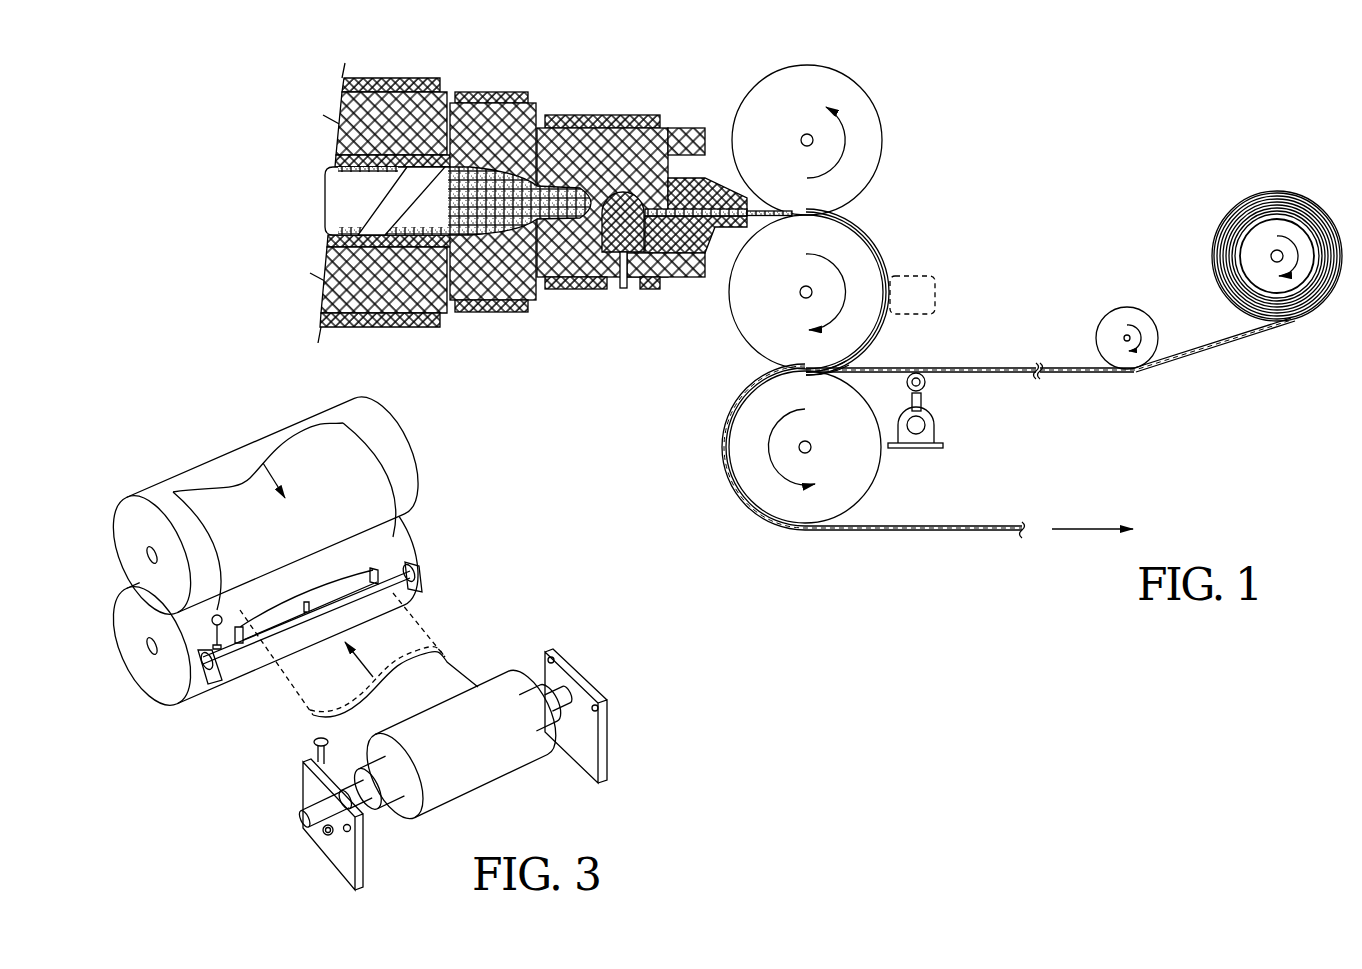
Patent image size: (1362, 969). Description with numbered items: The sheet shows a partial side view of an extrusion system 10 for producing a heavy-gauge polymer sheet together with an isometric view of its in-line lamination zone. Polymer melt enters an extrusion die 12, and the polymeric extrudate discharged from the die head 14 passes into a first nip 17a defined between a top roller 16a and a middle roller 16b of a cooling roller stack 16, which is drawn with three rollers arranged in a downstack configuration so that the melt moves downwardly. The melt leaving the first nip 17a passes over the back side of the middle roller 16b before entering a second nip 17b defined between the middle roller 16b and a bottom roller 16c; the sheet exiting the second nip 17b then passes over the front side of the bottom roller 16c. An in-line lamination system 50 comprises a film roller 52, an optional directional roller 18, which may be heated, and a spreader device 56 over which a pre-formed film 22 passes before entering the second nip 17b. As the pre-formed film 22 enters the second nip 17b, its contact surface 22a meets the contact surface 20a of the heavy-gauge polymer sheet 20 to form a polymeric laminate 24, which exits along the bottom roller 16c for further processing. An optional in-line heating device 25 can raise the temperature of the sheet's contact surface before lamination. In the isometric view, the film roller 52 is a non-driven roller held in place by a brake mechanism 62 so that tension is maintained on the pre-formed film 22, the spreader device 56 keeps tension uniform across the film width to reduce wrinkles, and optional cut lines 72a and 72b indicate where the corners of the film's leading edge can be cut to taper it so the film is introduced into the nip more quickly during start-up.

In FIG. 1, the extrusion system 10 is at (1162, 68).
In FIG. 1, the extrusion die 12 is at (528, 201).
In FIG. 1, the die head 14 is at (722, 286).
In FIG. 1, the cooling roller stack 16 is at (861, 292).
In FIG. 1, the top roller 16a is at (863, 163).
In FIG. 1, the middle roller 16b is at (851, 252).
In FIG. 3, the middle roller 16b is at (132, 536).
In FIG. 1, the bottom roller 16c is at (863, 448).
In FIG. 3, the bottom roller 16c is at (132, 627).
In FIG. 1, the first nip 17a is at (850, 212).
In FIG. 1, the second nip 17b is at (858, 361).
In FIG. 1, the directional roller 18 is at (1136, 320).
In FIG. 1, the heavy-gauge polymer sheet 20 is at (896, 292).
In FIG. 3, the heavy-gauge polymer sheet 20 is at (328, 478).
In FIG. 1, the contact surface of heavy-gauge polymer sheet 20a is at (852, 355).
In FIG. 1, the pre-formed film 22 is at (1075, 367).
In FIG. 3, the pre-formed film 22 is at (444, 690).
In FIG. 1, the contact surface of pre-formed film 22a is at (884, 370).
In FIG. 1, the polymeric laminate 24 is at (854, 542).
In FIG. 1, the in-line heating device 25 is at (936, 284).
In FIG. 1, the in-line lamination system 50 is at (1196, 271).
In FIG. 3, the in-line lamination system 50 is at (516, 590).
In FIG. 1, the film roller 52 is at (1296, 240).
In FIG. 3, the film roller 52 is at (592, 670).
In FIG. 1, the spreader device 56 is at (947, 402).
In FIG. 3, the spreader device 56 is at (236, 674).
In FIG. 3, the brake mechanism 62 is at (328, 845).
In FIG. 3, the cut line 72a is at (200, 672).
In FIG. 3, the cut line 72b is at (412, 565).